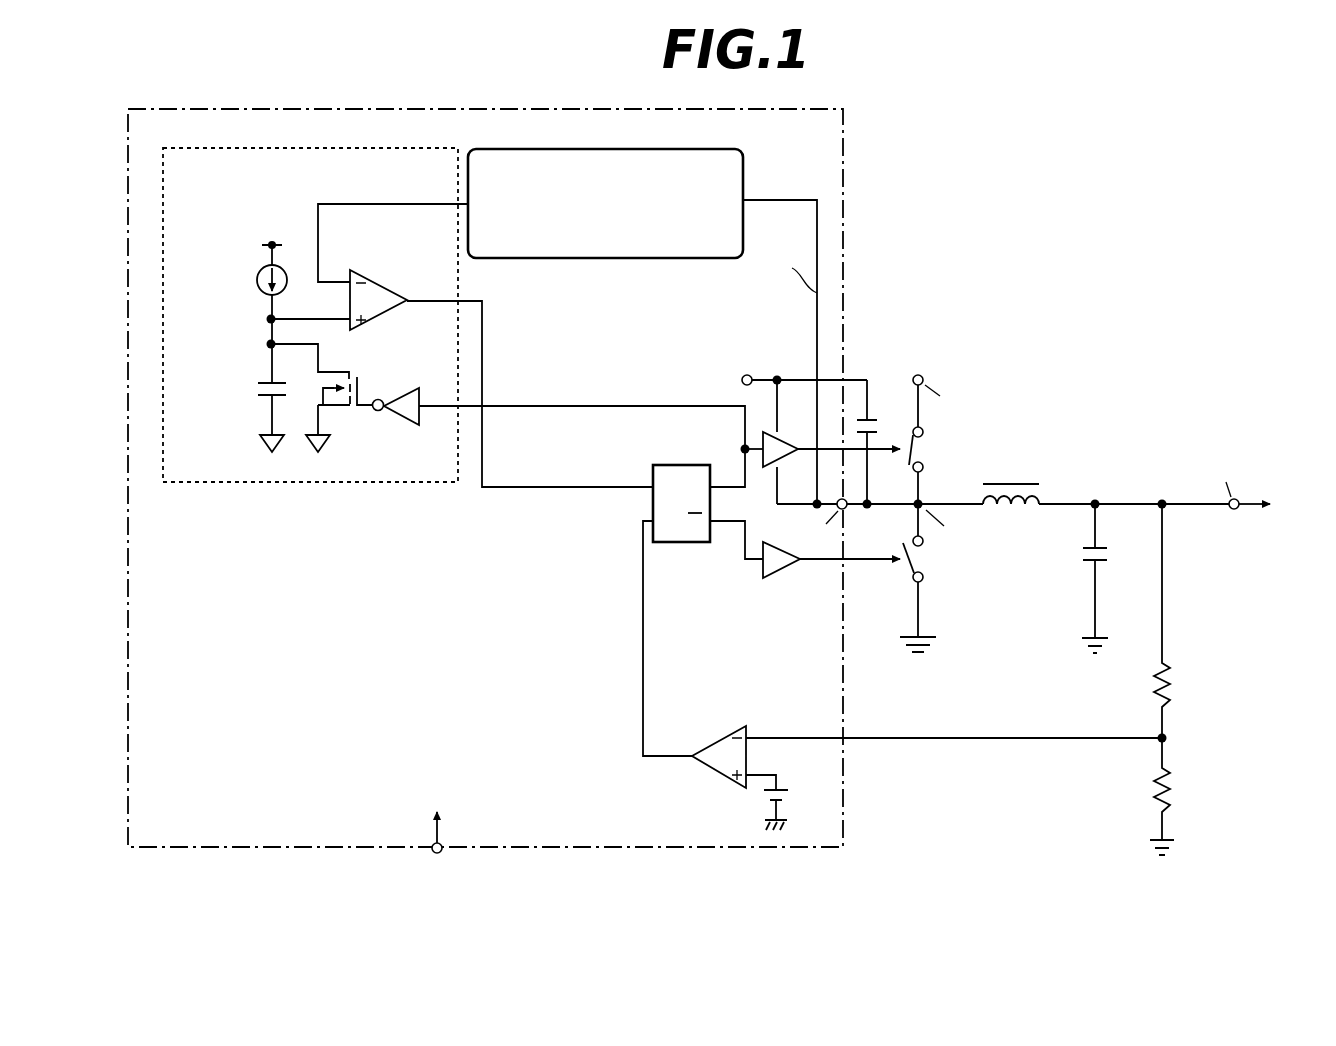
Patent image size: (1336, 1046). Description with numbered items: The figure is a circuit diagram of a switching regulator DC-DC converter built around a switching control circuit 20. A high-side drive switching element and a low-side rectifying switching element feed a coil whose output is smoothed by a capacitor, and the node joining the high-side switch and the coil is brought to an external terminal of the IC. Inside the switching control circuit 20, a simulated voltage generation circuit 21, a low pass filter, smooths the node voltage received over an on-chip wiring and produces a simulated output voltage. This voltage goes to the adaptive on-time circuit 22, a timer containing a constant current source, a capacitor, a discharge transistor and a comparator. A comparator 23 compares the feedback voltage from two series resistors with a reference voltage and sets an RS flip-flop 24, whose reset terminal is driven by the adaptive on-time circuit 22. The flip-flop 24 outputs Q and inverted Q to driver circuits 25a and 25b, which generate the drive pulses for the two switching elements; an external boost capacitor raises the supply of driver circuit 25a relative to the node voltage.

The switching control circuit 20 is at (843, 172).
The simulated voltage generation circuit 21 is at (623, 260).
The adaptive on-time circuit 22 is at (243, 486).
The comparator 23 is at (710, 772).
The RS flip-flop 24 is at (680, 545).
The driver circuit 25a is at (770, 470).
The driver circuit 25b is at (780, 580).